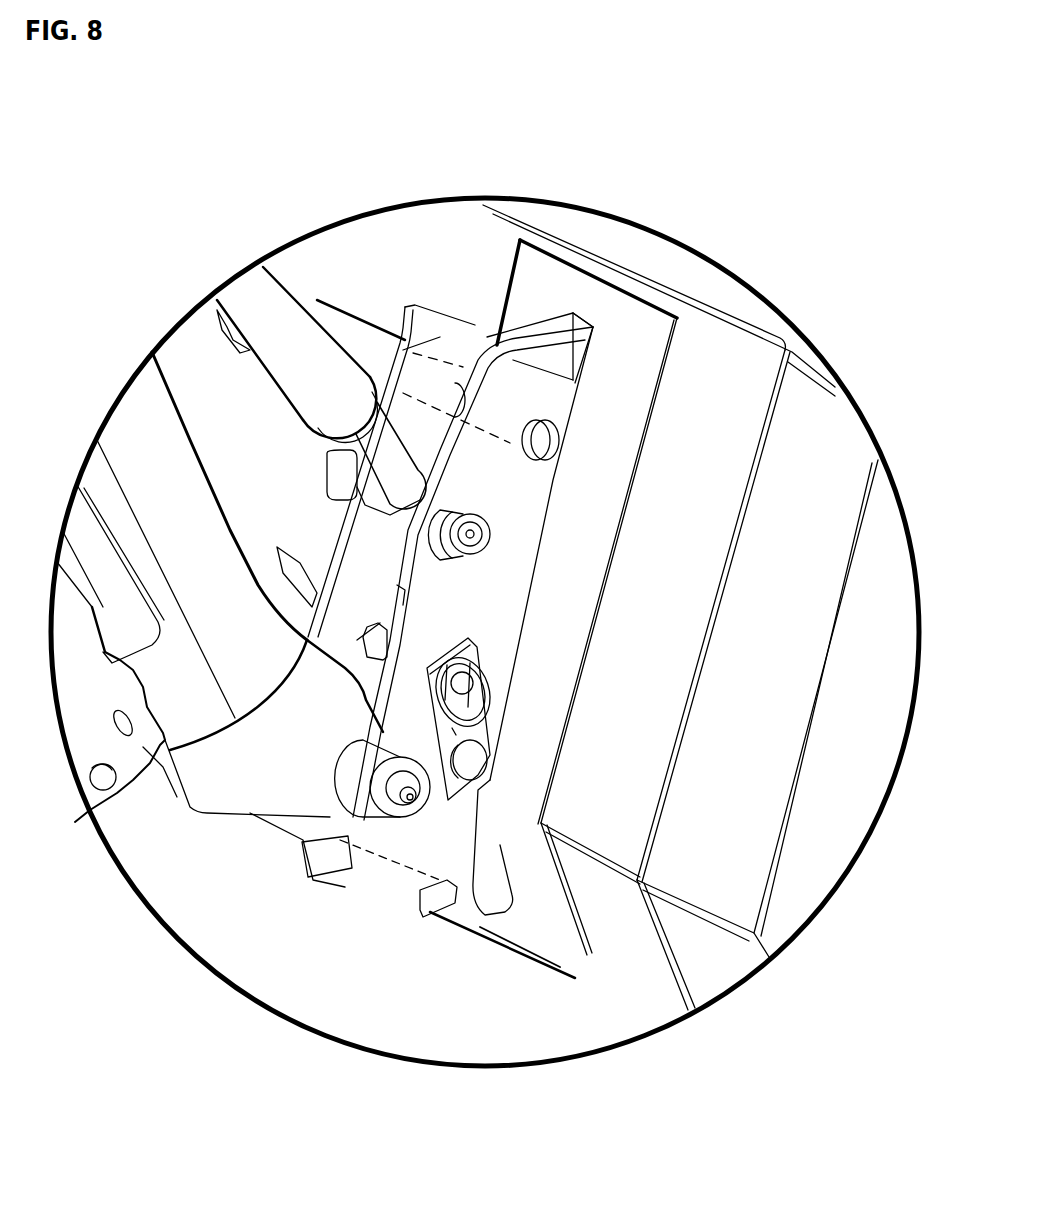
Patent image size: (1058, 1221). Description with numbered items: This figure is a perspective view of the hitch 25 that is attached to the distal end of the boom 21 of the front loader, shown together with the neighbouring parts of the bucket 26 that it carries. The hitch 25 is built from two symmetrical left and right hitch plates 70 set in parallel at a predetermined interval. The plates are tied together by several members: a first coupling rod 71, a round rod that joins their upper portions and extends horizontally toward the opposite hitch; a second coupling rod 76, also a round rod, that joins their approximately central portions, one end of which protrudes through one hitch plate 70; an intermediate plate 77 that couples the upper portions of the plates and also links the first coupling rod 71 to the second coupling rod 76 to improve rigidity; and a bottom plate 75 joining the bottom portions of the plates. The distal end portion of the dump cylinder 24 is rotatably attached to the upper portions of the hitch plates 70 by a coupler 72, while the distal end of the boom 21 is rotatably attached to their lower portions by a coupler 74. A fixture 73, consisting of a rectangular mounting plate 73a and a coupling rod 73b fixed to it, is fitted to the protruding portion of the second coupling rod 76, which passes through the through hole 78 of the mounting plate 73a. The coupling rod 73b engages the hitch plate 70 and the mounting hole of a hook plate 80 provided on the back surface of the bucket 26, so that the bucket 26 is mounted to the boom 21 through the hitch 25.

The boom 21 is at (150, 440).
The dump cylinder 24 is at (281, 274).
The hitch 25 is at (489, 260).
The bucket 26 is at (725, 372).
The hitch plate 70 is at (325, 540).
The first coupling rod 71 is at (357, 330).
The coupler 72 is at (485, 540).
The fixture 73 is at (495, 752).
The mounting plate 73a is at (490, 738).
The coupling rod 73b is at (503, 795).
The coupler 74 is at (425, 808).
The bottom plate 75 is at (348, 880).
The second coupling rod 76 is at (388, 638).
The intermediate plate 77 is at (397, 597).
The through hole 78 is at (433, 690).
The hook plate 80 is at (578, 355).